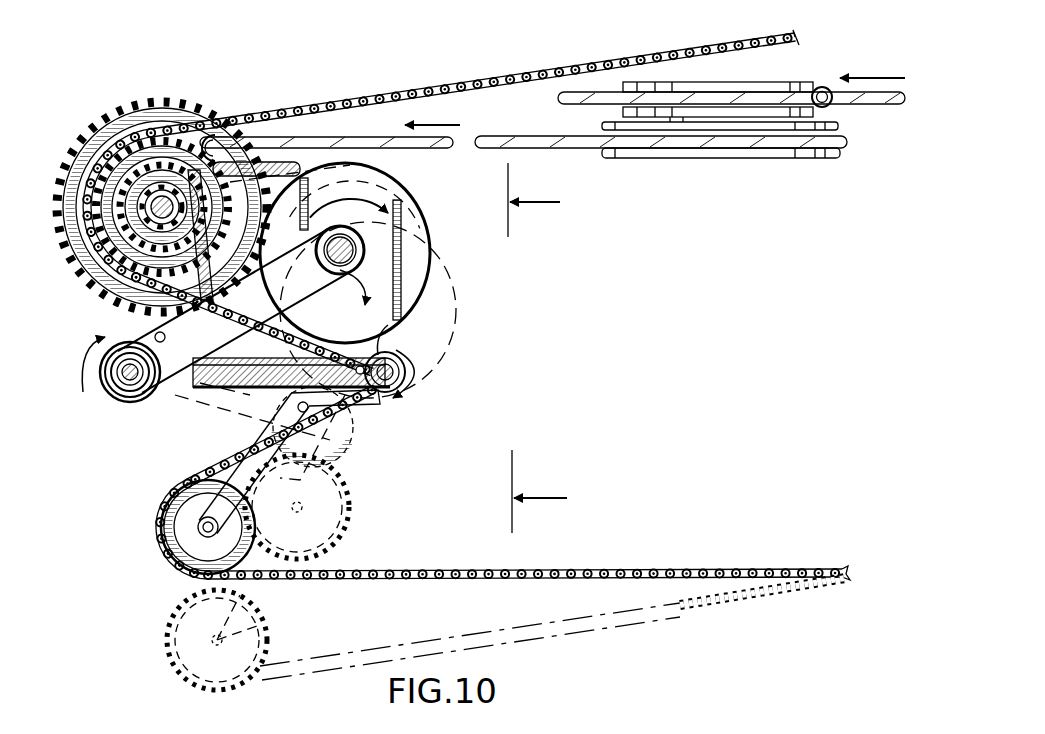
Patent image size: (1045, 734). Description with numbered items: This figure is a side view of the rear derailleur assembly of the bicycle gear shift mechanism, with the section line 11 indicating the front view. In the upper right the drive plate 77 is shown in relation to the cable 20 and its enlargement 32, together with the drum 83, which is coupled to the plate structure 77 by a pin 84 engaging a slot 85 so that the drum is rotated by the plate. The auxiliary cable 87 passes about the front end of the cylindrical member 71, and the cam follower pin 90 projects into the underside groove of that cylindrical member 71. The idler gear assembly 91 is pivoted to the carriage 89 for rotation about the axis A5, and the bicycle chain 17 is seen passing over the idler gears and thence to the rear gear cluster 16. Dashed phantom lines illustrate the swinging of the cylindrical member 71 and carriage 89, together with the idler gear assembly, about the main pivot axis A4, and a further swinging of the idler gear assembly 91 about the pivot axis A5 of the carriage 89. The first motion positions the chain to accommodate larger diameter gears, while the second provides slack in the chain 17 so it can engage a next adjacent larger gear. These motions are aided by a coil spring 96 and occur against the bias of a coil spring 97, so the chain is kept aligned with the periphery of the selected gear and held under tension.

The section line 11 is at (585, 512).
The rear gear cluster 16 is at (92, 118).
The bicycle chain 17 is at (392, 566).
The cable 20 is at (862, 104).
The enlargement 32 is at (822, 87).
The cylindrical member 71 is at (421, 220).
The drive plate 77 is at (708, 82).
The drum 83 is at (782, 158).
The pin 84 is at (670, 120).
The slot 85 is at (683, 119).
The auxiliary cable 87 is at (427, 148).
The carriage 89 is at (367, 351).
The cam follower pin 90 is at (382, 336).
The idler gear assembly 91 is at (168, 488).
The coil spring 96 is at (96, 390).
The coil spring 97 is at (413, 374).
The main pivot axis A4 is at (130, 382).
The pivot axis of carriage A5 is at (385, 393).